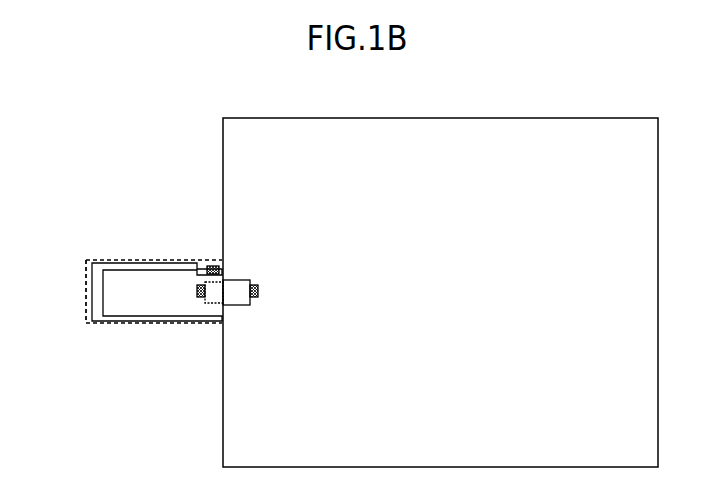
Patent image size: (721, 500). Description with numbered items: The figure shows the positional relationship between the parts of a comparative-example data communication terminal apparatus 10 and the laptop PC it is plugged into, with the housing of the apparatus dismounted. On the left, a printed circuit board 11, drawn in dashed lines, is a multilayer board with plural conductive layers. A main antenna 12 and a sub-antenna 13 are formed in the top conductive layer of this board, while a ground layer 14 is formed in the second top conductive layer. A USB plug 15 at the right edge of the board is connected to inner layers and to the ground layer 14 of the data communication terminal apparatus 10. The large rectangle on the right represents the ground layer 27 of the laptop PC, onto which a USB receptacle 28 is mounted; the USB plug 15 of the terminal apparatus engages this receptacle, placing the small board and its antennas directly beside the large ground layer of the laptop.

The data communication terminal apparatus 10 is at (134, 241).
The printed circuit board 11 is at (106, 322).
The main antenna 12 is at (86, 291).
The sub-antenna 13 is at (208, 266).
The ground layer 14 is at (155, 300).
The USB plug 15 is at (212, 303).
The ground layer 27 is at (605, 127).
The USB receptacle 28 is at (243, 280).